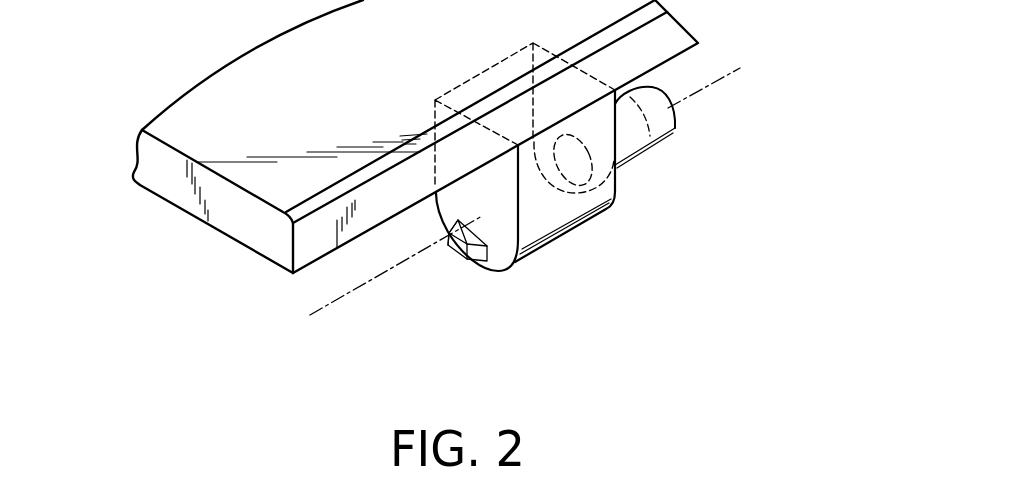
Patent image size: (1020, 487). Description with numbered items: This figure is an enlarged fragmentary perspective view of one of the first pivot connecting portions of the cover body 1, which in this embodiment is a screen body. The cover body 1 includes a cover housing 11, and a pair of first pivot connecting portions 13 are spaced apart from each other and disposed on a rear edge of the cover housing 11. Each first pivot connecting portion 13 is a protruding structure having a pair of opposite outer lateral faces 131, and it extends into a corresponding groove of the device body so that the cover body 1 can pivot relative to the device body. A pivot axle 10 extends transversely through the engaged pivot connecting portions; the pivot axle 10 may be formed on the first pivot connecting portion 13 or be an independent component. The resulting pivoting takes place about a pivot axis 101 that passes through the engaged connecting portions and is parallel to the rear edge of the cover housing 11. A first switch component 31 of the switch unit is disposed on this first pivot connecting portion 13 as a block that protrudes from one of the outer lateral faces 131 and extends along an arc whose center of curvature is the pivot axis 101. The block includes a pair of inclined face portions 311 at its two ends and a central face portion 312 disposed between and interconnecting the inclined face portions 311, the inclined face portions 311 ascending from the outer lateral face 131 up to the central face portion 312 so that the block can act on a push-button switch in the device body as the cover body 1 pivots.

The cover body 1 is at (270, 74).
The pivot axle 10 is at (676, 118).
The pivot axis 101 is at (510, 207).
The cover housing 11 is at (233, 217).
The first pivot connecting portion 13 is at (574, 235).
The outer lateral face 131 is at (613, 205).
The first switch component 31 is at (463, 260).
The inclined face portion 311 is at (447, 247).
The central face portion 312 is at (454, 259).